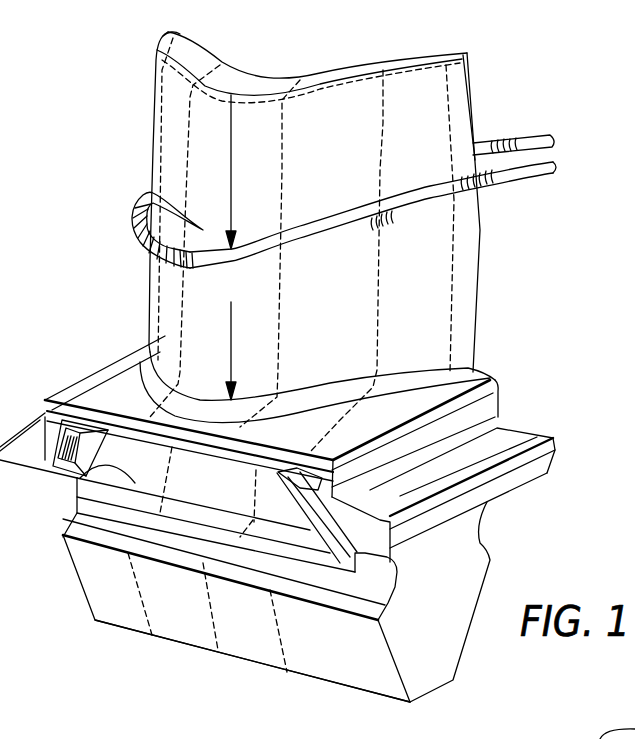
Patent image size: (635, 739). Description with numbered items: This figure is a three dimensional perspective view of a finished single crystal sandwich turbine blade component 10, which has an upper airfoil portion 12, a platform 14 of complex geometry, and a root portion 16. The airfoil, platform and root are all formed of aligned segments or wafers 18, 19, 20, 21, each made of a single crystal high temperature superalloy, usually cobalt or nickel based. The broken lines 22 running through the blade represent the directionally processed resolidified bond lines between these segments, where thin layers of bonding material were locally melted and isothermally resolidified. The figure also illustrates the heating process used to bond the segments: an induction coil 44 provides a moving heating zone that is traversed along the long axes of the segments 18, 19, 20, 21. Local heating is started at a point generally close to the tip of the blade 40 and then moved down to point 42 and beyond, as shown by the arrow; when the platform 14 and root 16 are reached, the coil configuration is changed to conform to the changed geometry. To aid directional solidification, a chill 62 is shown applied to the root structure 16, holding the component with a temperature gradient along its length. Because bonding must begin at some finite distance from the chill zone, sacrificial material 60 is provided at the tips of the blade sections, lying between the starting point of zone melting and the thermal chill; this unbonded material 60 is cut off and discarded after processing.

The turbine blade component 10 is at (625, 261).
The airfoil portion 12 is at (478, 326).
The platform 14 is at (500, 417).
The root portion 16 is at (480, 536).
The segment 18 is at (170, 122).
The segment 19 is at (152, 194).
The segment 20 is at (363, 257).
The segment 21 is at (433, 287).
The bond lines 22 is at (448, 125).
The starting point of local heating 40 is at (233, 98).
The point of heating travel 42 is at (237, 266).
The induction coil 44 is at (557, 164).
The sacrificial material 60 is at (470, 53).
The chill 62 is at (229, 725).